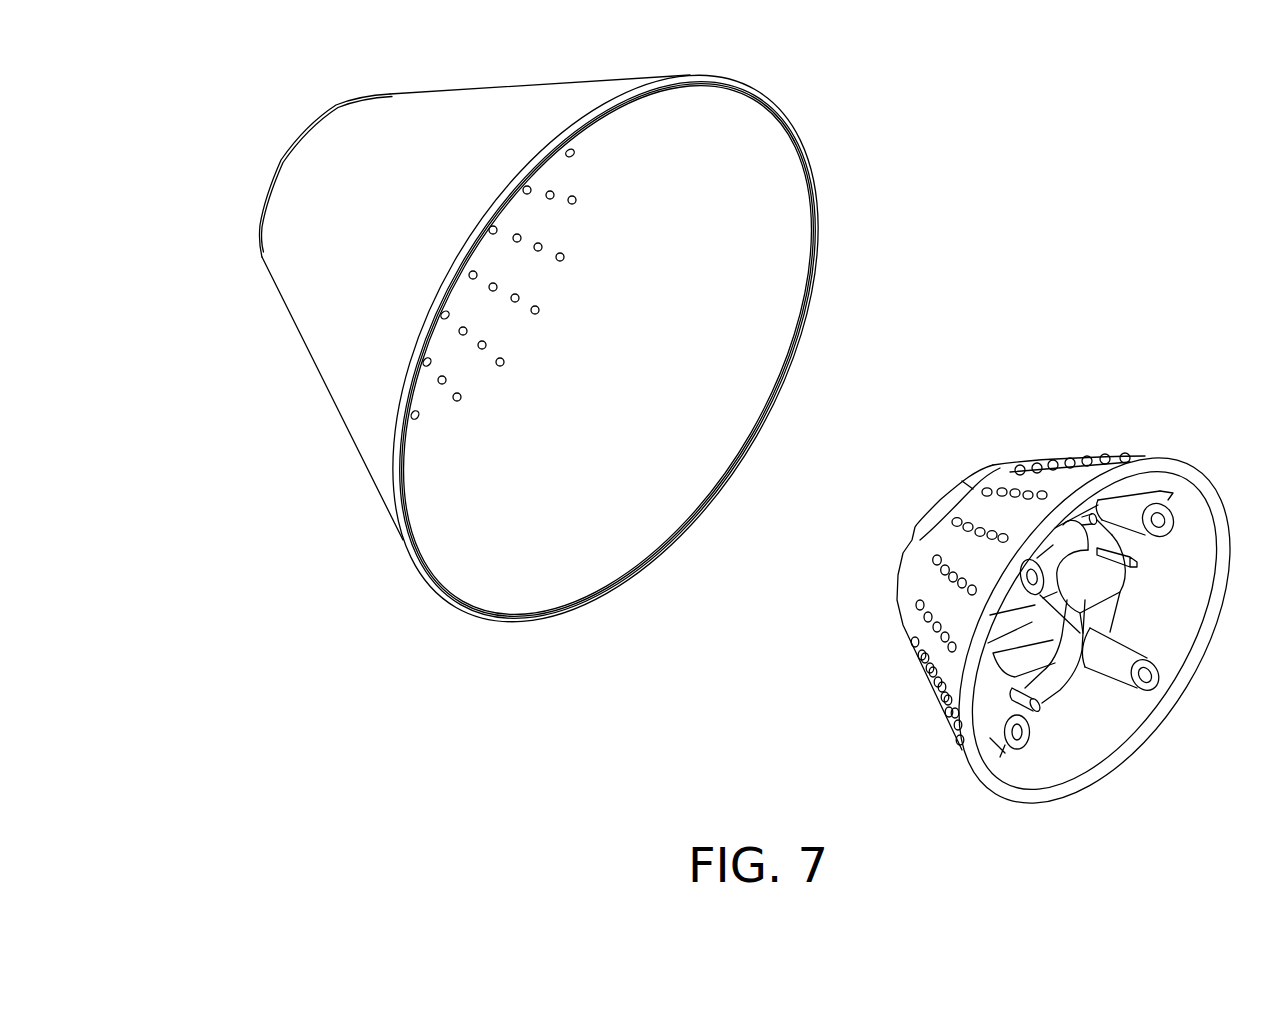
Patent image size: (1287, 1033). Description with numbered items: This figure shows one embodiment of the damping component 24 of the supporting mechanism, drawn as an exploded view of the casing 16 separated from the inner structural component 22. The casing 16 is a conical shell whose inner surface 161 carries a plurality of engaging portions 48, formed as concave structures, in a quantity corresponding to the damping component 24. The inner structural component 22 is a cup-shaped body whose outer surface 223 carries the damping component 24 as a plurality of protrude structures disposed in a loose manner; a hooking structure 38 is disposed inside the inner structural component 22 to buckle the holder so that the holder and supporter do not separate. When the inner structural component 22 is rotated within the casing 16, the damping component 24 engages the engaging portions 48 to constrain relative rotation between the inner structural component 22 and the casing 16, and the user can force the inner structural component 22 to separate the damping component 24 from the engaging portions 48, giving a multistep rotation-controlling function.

The casing 16 is at (580, 348).
The engaging portion 48 is at (527, 187).
The inner surface 161 is at (777, 247).
The inner structural component 22 is at (1018, 591).
The damping component 24 is at (1072, 462).
The hooking structure 38 is at (1097, 580).
The outer surface 223 is at (915, 582).